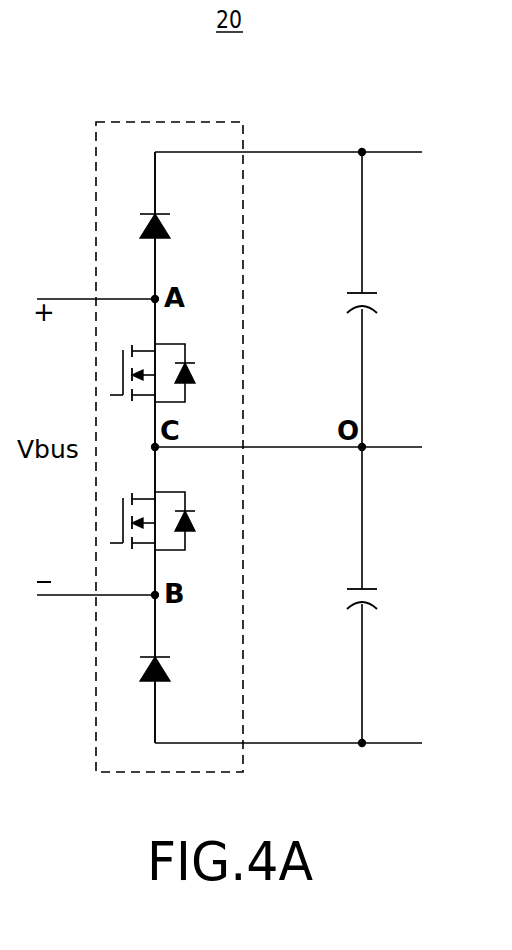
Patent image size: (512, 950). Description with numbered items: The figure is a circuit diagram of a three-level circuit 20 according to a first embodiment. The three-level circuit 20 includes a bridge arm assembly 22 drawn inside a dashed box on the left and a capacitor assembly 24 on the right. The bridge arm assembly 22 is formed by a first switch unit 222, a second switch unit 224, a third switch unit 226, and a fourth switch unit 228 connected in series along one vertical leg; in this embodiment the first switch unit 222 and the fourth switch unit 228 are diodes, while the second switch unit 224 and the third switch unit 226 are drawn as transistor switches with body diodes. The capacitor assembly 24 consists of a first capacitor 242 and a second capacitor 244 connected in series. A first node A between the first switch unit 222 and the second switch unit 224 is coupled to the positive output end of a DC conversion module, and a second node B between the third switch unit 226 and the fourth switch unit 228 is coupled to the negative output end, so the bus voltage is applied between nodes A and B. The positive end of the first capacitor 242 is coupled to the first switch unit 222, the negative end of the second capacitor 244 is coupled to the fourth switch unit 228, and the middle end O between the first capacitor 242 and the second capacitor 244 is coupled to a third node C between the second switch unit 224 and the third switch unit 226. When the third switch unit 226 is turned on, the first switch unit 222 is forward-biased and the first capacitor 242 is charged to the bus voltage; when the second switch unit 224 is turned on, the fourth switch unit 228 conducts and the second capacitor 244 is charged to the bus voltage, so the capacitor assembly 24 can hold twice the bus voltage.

The three-level circuit 20 is at (158, 94).
The bridge arm assembly 22 is at (169, 129).
The capacitor assembly 24 is at (364, 138).
The first switch unit 222 is at (172, 224).
The second switch unit 224 is at (194, 373).
The third switch unit 226 is at (194, 520).
The fourth switch unit 228 is at (172, 666).
The first capacitor 242 is at (347, 302).
The second capacitor 244 is at (347, 597).